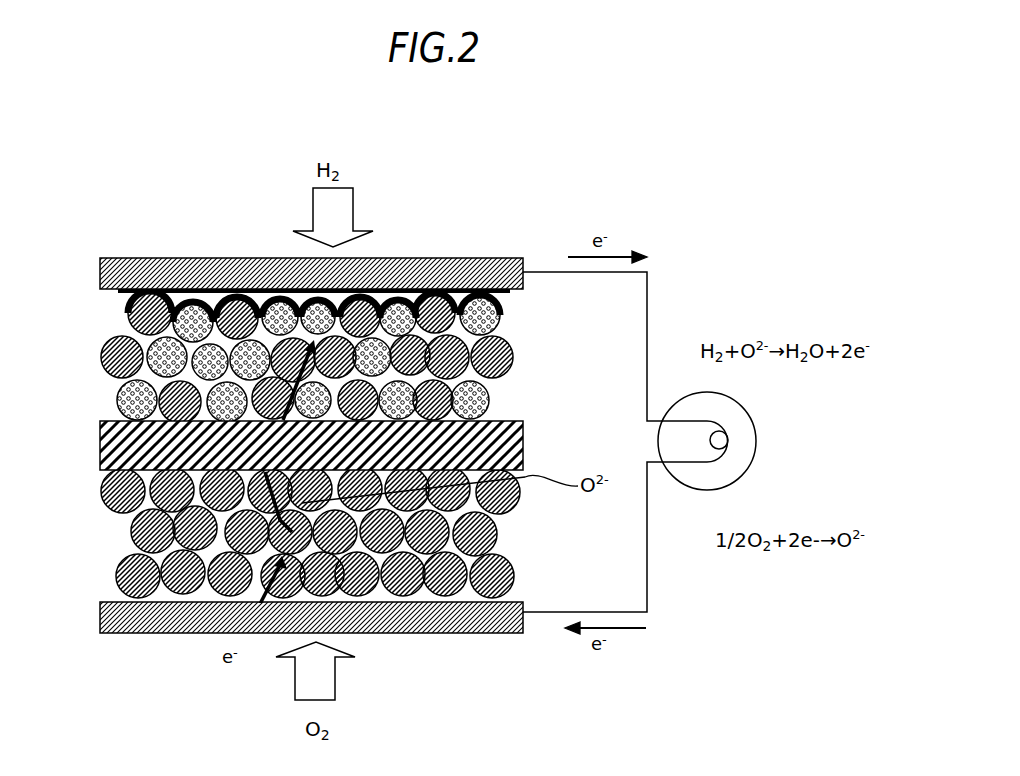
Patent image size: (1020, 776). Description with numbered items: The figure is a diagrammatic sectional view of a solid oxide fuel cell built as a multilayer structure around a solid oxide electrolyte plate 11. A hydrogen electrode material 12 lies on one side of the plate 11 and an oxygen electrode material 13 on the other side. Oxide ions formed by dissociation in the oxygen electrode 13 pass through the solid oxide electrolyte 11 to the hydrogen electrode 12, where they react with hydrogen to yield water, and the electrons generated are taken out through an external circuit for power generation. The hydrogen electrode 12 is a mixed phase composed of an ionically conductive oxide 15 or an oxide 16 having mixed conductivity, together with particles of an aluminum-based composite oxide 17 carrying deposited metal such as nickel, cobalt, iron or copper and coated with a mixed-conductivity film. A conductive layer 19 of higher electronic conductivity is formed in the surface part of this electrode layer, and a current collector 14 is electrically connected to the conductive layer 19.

The solid oxide electrolyte plate 11 is at (98, 450).
The hydrogen electrode material 12 is at (299, 302).
The oxygen electrode material 13 is at (78, 468).
The current collector 14 is at (468, 258).
The ionically conductive oxide 15 is at (241, 255).
The oxide having mixed conductivity 16 is at (229, 310).
The aluminum-based composite oxide 17 is at (498, 318).
The conductive layer 19 is at (176, 291).